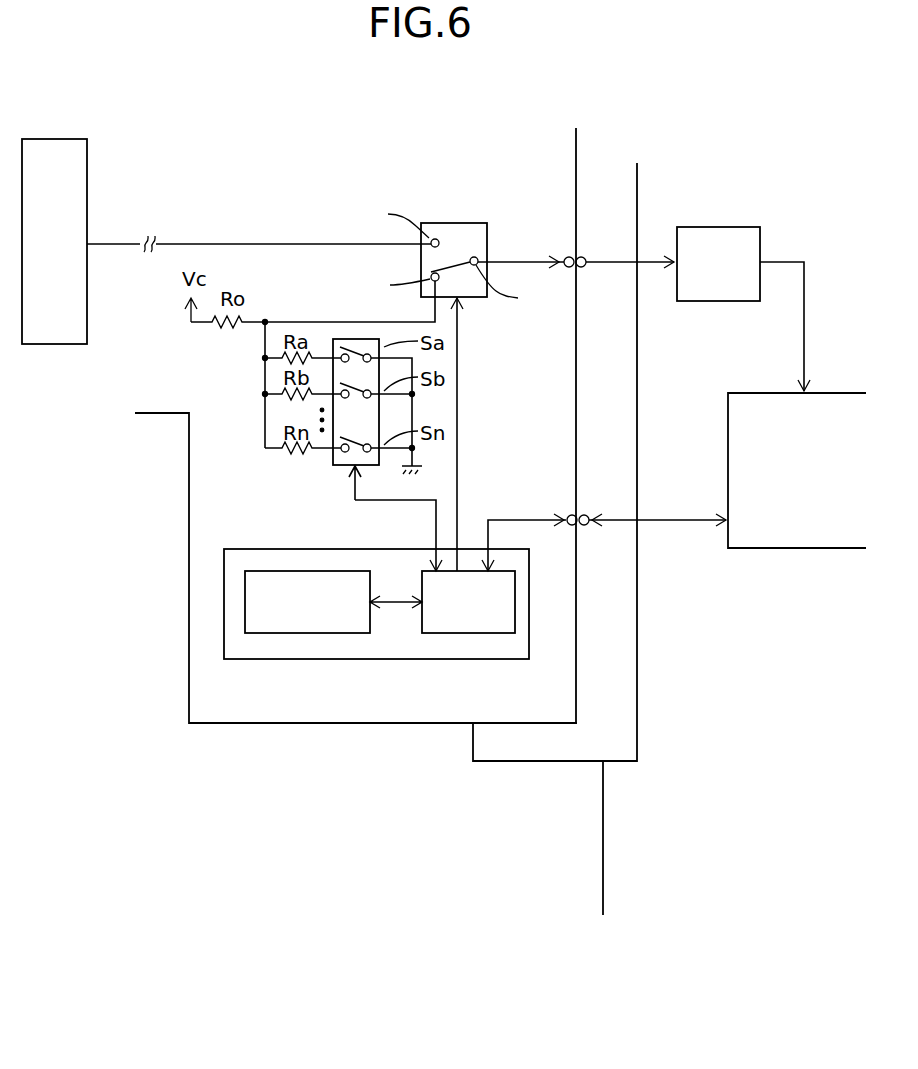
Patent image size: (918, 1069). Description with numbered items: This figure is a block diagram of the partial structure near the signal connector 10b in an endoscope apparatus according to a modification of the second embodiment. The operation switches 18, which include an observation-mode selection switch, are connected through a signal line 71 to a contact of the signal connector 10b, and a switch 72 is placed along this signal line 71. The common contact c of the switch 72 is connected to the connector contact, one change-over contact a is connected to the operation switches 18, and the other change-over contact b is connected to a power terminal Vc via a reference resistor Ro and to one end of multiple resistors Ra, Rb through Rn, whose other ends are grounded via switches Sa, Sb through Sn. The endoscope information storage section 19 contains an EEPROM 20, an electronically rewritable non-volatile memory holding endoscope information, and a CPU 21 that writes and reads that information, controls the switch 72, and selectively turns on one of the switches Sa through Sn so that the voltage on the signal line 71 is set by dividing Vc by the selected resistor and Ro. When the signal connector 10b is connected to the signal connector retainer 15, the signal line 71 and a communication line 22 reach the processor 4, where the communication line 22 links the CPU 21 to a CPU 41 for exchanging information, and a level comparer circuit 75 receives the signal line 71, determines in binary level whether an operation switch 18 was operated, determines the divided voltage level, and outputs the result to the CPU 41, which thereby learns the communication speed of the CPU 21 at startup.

The operation switches 18 is at (52, 139).
The switch 72 is at (455, 222).
The signal line 71 is at (539, 258).
The level comparer circuit 75 is at (728, 227).
The CPU 41 is at (838, 393).
The communication line 22 is at (680, 522).
The endoscope information storage section 19 is at (224, 640).
The EEPROM 20 is at (300, 634).
The CPU 21 is at (460, 634).
The signal connector 10b is at (330, 724).
The signal connector retainer 15 is at (522, 761).
The processor 4 is at (584, 864).